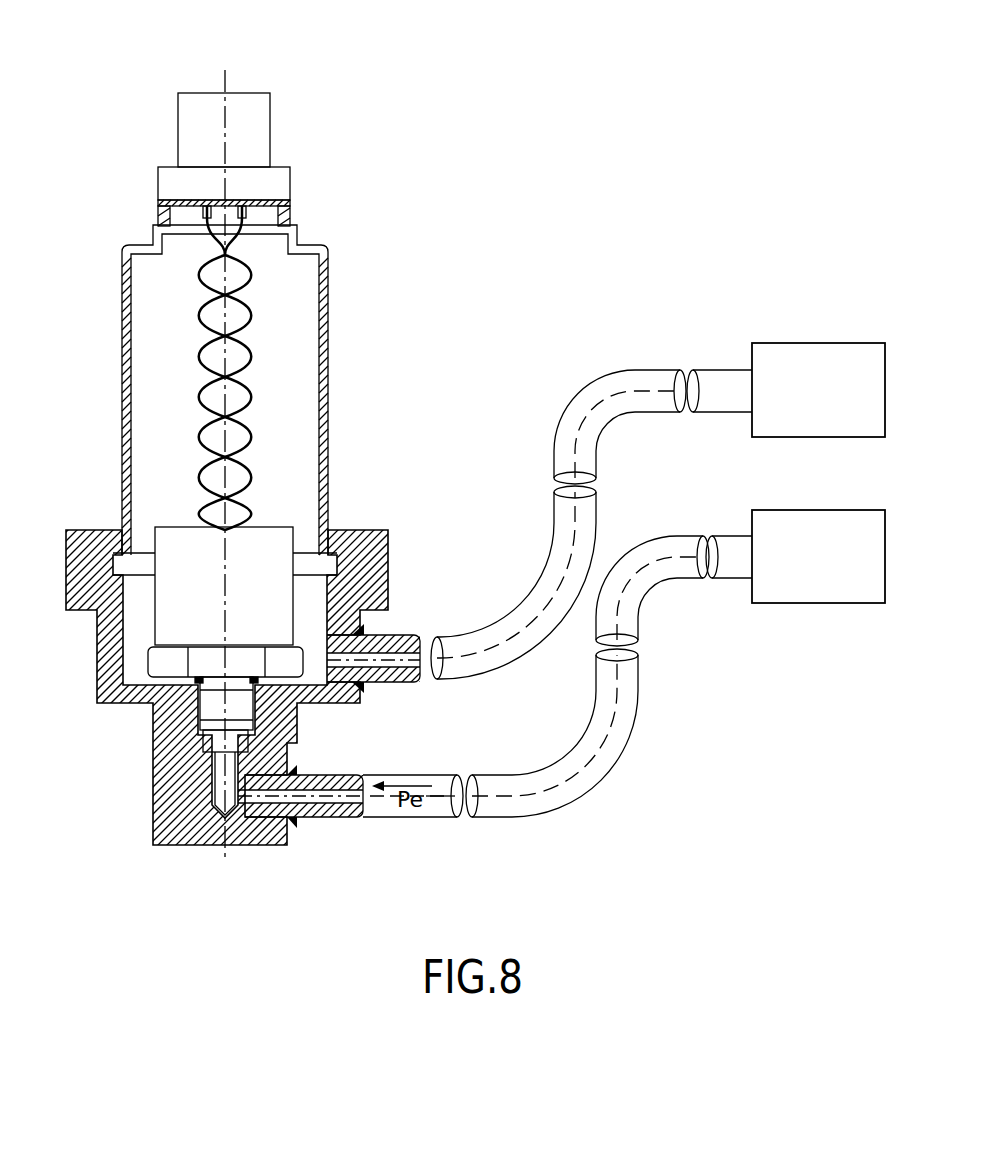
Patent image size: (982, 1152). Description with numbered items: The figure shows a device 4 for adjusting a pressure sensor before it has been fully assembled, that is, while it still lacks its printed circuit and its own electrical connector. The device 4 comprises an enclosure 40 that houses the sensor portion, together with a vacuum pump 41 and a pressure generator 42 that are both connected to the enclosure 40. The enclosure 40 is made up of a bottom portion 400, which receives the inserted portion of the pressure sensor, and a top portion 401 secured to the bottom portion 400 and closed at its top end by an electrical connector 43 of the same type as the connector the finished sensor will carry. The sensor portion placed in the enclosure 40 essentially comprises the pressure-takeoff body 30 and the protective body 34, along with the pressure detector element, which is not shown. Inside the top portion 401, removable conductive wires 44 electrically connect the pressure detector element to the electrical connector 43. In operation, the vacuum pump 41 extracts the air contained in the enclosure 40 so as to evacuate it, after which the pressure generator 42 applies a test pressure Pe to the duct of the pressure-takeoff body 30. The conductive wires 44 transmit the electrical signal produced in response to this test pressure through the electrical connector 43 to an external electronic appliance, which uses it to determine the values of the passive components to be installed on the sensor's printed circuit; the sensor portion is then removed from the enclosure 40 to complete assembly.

The device for adjusting the pressure sensor 4 is at (376, 430).
The electrical connector 43 is at (270, 136).
The removable conductive wires 44 is at (252, 318).
The enclosure 40 is at (225, 361).
The top portion 401 is at (122, 424).
The protective body 34 is at (278, 604).
The bottom portion 400 is at (97, 657).
The pressure-takeoff body 30 is at (282, 662).
The vacuum pump 41 is at (815, 358).
The pressure generator 42 is at (820, 595).